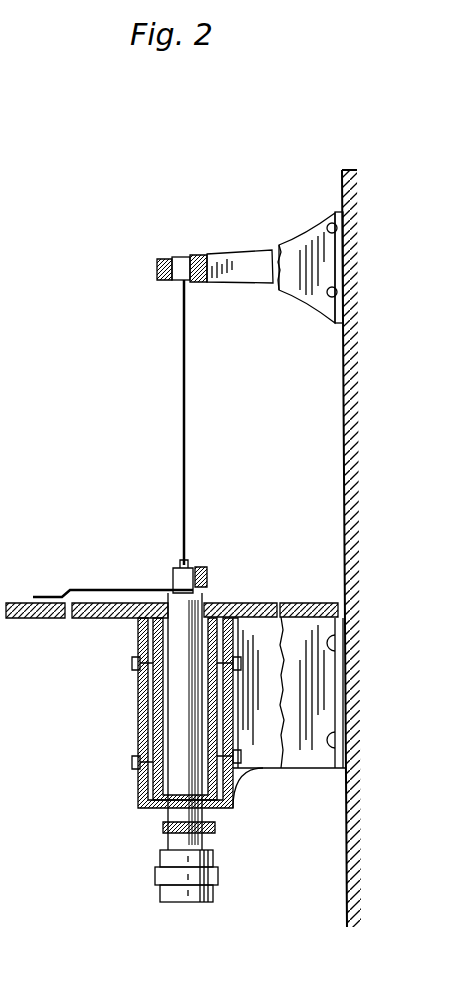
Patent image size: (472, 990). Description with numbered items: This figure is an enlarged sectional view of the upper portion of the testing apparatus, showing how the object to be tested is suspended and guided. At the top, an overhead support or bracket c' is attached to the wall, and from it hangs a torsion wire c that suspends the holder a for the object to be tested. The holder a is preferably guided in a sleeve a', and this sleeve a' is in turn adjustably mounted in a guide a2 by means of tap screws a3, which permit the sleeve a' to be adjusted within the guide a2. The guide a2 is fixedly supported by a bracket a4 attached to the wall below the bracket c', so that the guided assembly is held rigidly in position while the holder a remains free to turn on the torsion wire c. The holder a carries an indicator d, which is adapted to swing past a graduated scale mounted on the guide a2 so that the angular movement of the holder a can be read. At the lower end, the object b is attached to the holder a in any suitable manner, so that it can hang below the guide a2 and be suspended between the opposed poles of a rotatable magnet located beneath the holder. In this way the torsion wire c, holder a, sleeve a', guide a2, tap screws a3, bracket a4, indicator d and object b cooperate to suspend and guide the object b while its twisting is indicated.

The overhead support or bracket c' is at (250, 267).
The torsion wire c is at (196, 422).
The indicator d is at (117, 589).
The bracket a4 is at (303, 766).
The sleeve a' is at (164, 713).
The guide a2 is at (138, 727).
The tap screws a3 is at (132, 663).
The holder a is at (157, 721).
The object b is at (160, 873).